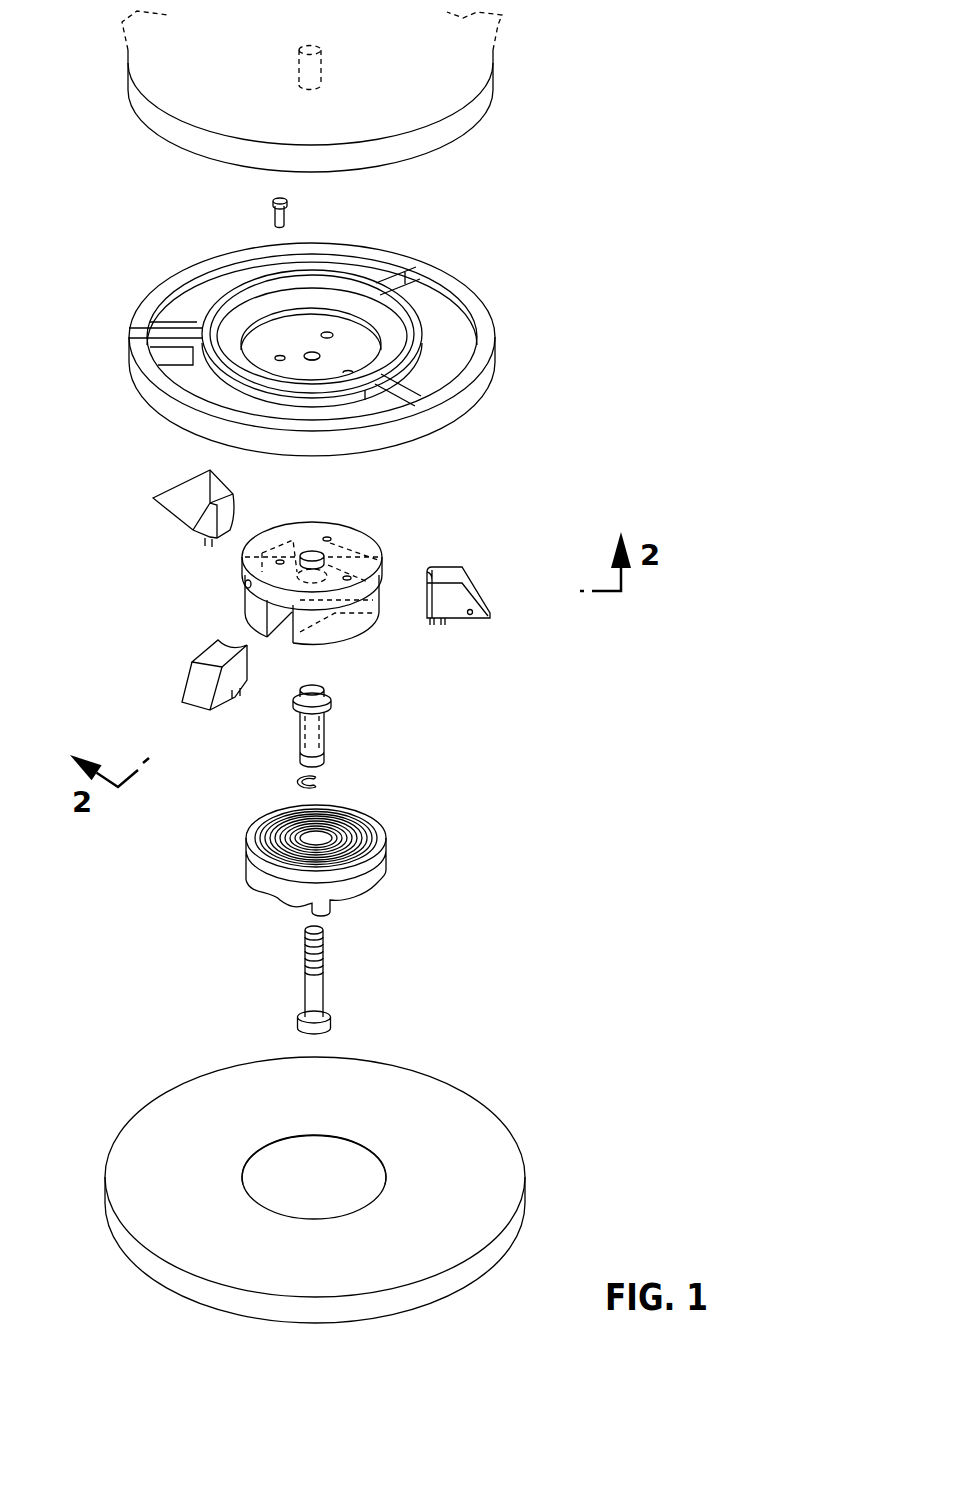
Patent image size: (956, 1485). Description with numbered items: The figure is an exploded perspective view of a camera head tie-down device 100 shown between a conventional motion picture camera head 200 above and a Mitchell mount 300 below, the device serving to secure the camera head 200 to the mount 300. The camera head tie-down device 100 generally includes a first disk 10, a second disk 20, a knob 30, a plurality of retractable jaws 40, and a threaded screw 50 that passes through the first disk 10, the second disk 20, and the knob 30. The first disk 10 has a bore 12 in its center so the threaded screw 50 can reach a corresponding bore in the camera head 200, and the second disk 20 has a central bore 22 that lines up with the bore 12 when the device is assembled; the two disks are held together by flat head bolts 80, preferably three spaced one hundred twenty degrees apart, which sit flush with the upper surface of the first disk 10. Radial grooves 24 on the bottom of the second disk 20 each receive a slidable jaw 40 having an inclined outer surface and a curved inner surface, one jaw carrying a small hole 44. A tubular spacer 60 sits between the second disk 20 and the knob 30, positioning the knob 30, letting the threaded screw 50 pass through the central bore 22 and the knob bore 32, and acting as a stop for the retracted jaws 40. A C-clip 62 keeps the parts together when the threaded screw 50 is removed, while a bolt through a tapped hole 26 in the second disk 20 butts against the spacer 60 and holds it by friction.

The first disk 10 is at (346, 349).
The bore 12 is at (321, 356).
The second disk 20 is at (307, 574).
The central bore 22 is at (311, 550).
The grooves 24 is at (278, 550).
The tapped hole 26 is at (242, 585).
The knob 30 is at (361, 850).
The bore 32 is at (370, 818).
The retractable jaws 40 is at (304, 590).
The clip hole 44 is at (471, 615).
The threaded screw 50 is at (320, 962).
The tubular spacer 60 is at (345, 729).
The C-clip 62 is at (325, 779).
The flat head bolt 80 is at (272, 213).
The camera head tie-down device 100 is at (656, 463).
The camera head 200 is at (510, 75).
The Mitchell mount 300 is at (503, 1093).